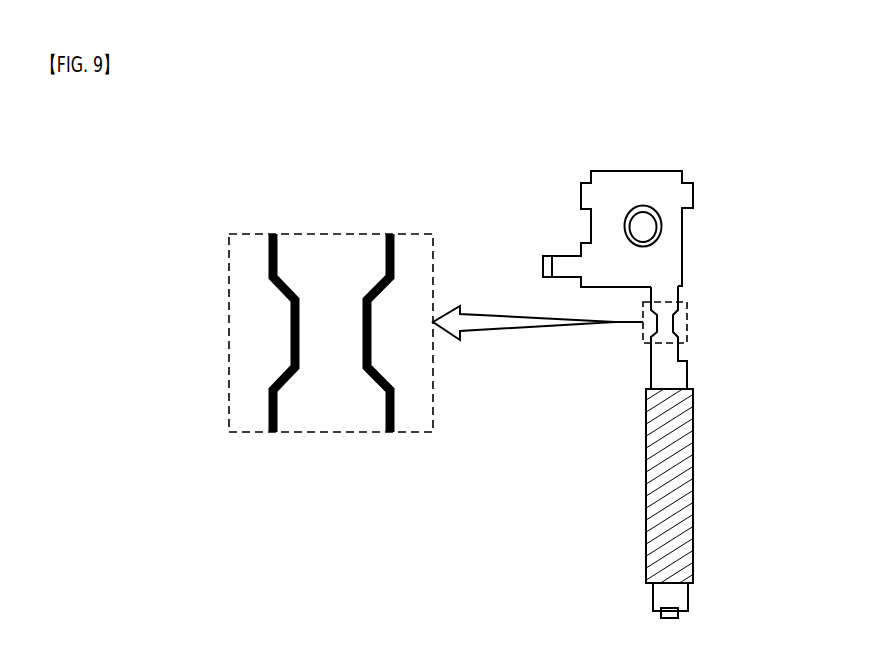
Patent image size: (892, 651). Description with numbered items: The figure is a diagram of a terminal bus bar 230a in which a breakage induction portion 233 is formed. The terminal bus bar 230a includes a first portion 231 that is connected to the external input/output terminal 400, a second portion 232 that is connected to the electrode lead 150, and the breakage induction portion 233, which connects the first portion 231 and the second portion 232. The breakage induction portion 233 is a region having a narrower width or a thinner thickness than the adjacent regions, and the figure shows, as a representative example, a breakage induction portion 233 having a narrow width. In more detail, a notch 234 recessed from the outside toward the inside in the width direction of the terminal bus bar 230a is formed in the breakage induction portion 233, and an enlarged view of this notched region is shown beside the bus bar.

The terminal bus bar 230a is at (684, 365).
The first portion 231 is at (648, 198).
The breakage induction portion 233 is at (706, 290).
The second portion 232 is at (663, 493).
The notch 234 is at (292, 333).
The external input/output terminal 400 is at (645, 222).
The electrode lead 150 is at (658, 520).